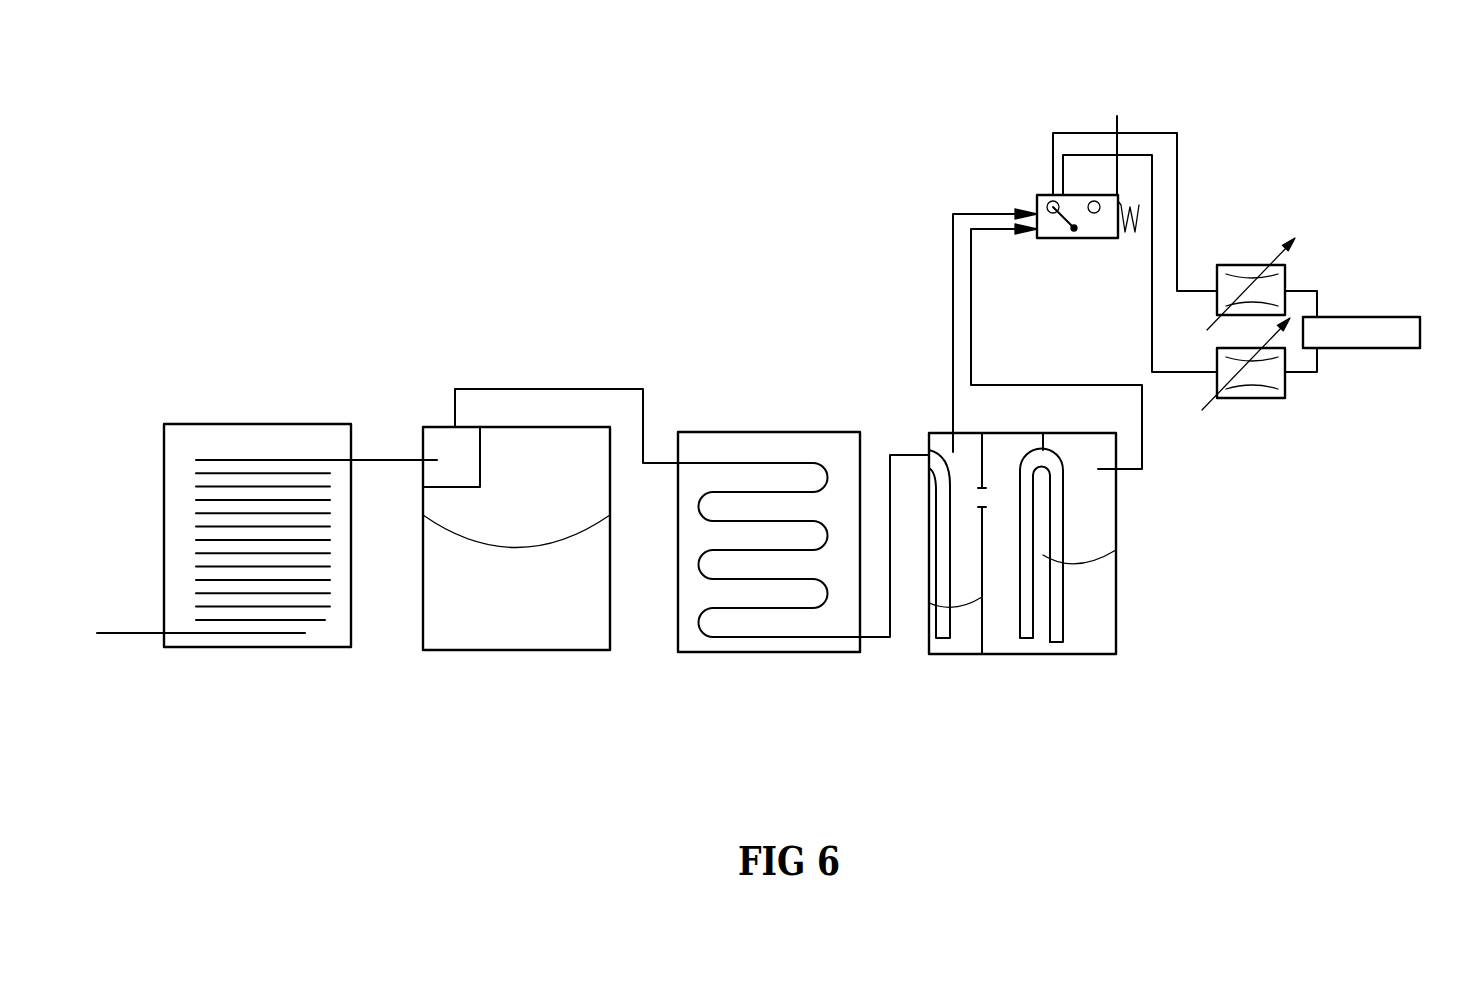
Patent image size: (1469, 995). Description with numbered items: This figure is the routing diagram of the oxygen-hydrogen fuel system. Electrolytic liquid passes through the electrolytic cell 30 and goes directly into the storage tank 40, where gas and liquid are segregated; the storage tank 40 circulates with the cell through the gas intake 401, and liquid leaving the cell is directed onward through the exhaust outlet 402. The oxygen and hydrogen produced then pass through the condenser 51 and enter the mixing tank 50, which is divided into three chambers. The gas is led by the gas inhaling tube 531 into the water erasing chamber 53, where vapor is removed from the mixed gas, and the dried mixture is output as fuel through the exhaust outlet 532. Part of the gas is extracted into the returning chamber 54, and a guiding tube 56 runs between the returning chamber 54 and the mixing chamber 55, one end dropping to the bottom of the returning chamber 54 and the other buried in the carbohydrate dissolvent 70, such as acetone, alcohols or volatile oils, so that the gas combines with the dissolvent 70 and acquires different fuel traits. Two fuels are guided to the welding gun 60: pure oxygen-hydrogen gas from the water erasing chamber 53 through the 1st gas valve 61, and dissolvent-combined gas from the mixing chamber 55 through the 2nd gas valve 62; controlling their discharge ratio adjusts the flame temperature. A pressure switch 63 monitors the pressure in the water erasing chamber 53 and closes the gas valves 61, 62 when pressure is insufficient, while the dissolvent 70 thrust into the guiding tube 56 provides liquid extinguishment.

The electrolytic cell 30 is at (262, 423).
The storage tank 40 is at (555, 427).
The gas intake 401 is at (437, 463).
The exhaust outlet 402 is at (455, 442).
The condenser 51 is at (780, 432).
The mixing tank 50 is at (1020, 433).
The gas inhaling tube 531 is at (932, 576).
The exhaust outlet 532 is at (950, 440).
The water erasing chamber 53 is at (960, 577).
The returning chamber 54 is at (1005, 560).
The mixing chamber 55 is at (1085, 553).
The guiding tube 56 is at (1065, 483).
The carbohydrate dissolvent 70 is at (1110, 567).
The pressure switch 63 is at (1048, 195).
The 1st gas valve 61 is at (1250, 265).
The 2nd gas valve 62 is at (1267, 398).
The welding gun 60 is at (1372, 317).